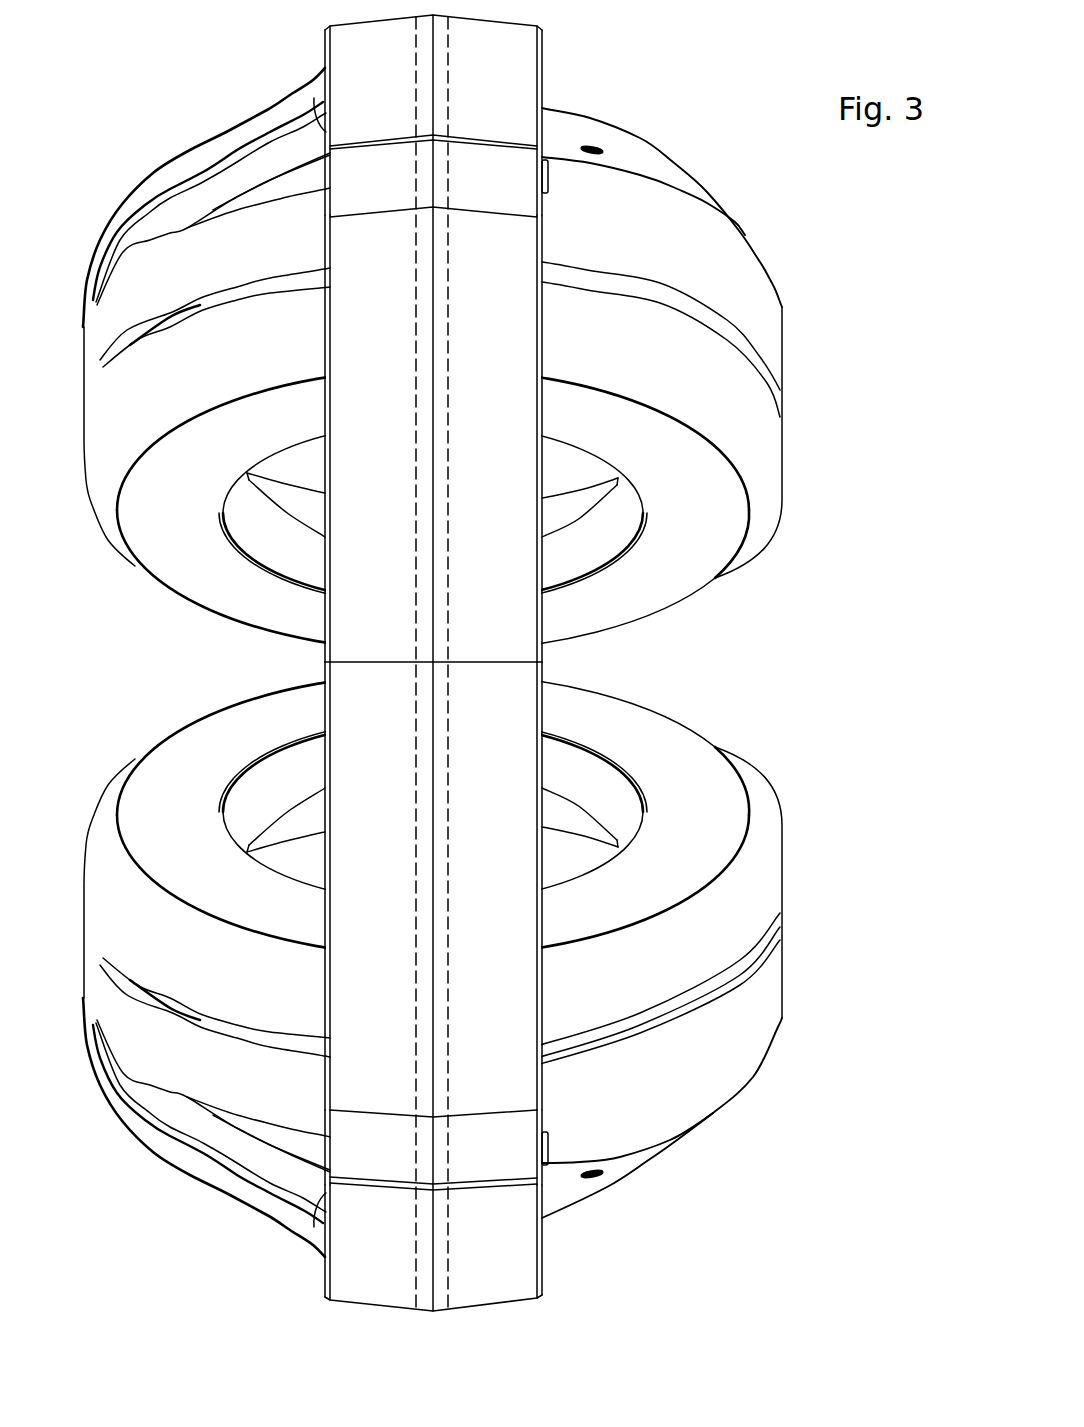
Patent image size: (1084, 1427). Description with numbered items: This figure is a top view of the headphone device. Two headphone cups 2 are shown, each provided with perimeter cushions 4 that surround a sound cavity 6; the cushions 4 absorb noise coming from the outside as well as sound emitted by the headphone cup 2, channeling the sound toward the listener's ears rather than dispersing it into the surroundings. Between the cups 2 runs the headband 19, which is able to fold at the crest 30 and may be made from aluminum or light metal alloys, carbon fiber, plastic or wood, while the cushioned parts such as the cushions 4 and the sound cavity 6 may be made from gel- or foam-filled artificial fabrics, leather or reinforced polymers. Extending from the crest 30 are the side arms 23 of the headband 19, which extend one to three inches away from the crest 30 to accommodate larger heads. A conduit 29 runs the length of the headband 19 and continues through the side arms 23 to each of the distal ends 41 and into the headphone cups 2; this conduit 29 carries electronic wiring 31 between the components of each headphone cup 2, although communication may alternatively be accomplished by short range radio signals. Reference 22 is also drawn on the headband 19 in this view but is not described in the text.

The headphone cup 2 is at (762, 470).
The perimeter cushion 4 is at (711, 793).
The sound cavity 6 is at (600, 803).
The headband 19 is at (516, 633).
The shaft section 22 is at (541, 1108).
The side arm 23 is at (509, 1255).
The conduit 29 is at (440, 529).
The crest 30 is at (351, 660).
The electronic wiring 31 is at (435, 612).
The distal end 41 is at (292, 86).